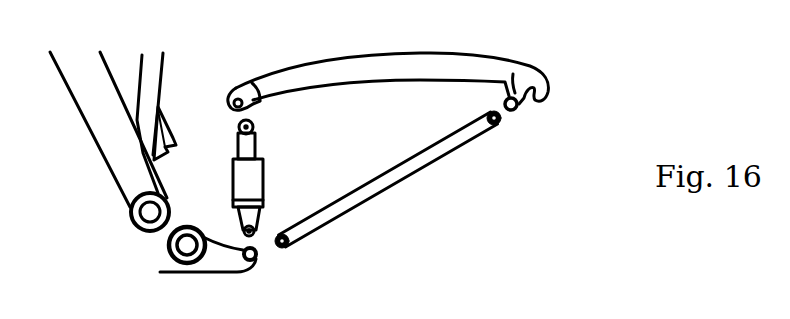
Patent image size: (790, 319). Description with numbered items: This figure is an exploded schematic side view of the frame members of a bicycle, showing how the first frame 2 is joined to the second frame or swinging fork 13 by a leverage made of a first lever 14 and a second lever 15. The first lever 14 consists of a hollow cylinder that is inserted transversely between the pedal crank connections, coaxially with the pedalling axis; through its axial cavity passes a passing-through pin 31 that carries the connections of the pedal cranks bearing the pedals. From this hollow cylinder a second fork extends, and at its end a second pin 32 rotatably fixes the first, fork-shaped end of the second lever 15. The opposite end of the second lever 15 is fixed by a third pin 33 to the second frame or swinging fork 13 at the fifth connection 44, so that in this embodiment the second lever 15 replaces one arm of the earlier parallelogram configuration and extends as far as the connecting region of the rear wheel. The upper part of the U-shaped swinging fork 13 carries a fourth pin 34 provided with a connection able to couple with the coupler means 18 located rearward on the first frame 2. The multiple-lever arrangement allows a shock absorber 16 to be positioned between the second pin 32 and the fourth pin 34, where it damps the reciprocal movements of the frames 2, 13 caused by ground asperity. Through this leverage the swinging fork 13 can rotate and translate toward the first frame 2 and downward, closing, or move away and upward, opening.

The first frame 2 is at (93, 144).
The second frame or swinging fork 13 is at (372, 63).
The first lever 14 is at (162, 272).
The second lever 15 is at (310, 236).
The shock absorber 16 is at (263, 176).
The coupler means 18 is at (170, 102).
The passing-through pin 31 is at (130, 213).
The second pin 32 is at (256, 260).
The third pin 33 is at (497, 124).
The fourth pin 34 is at (240, 97).
The fifth connection 44 is at (518, 109).